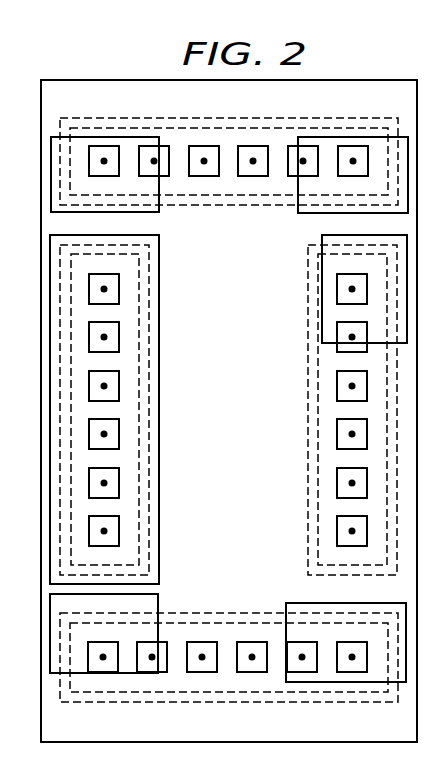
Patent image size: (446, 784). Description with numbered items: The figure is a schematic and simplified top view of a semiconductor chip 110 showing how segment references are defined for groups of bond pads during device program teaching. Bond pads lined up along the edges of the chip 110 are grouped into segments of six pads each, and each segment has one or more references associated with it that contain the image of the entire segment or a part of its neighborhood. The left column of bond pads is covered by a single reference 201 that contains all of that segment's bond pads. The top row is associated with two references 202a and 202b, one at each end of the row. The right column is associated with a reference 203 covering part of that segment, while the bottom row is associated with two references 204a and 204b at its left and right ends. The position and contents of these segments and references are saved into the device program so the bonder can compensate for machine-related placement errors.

The semiconductor chip 110 is at (244, 422).
The reference 201 is at (159, 288).
The reference 202a is at (108, 137).
The reference 202b is at (349, 138).
The reference 203 is at (322, 289).
The reference 204a is at (158, 605).
The reference 204b is at (347, 682).